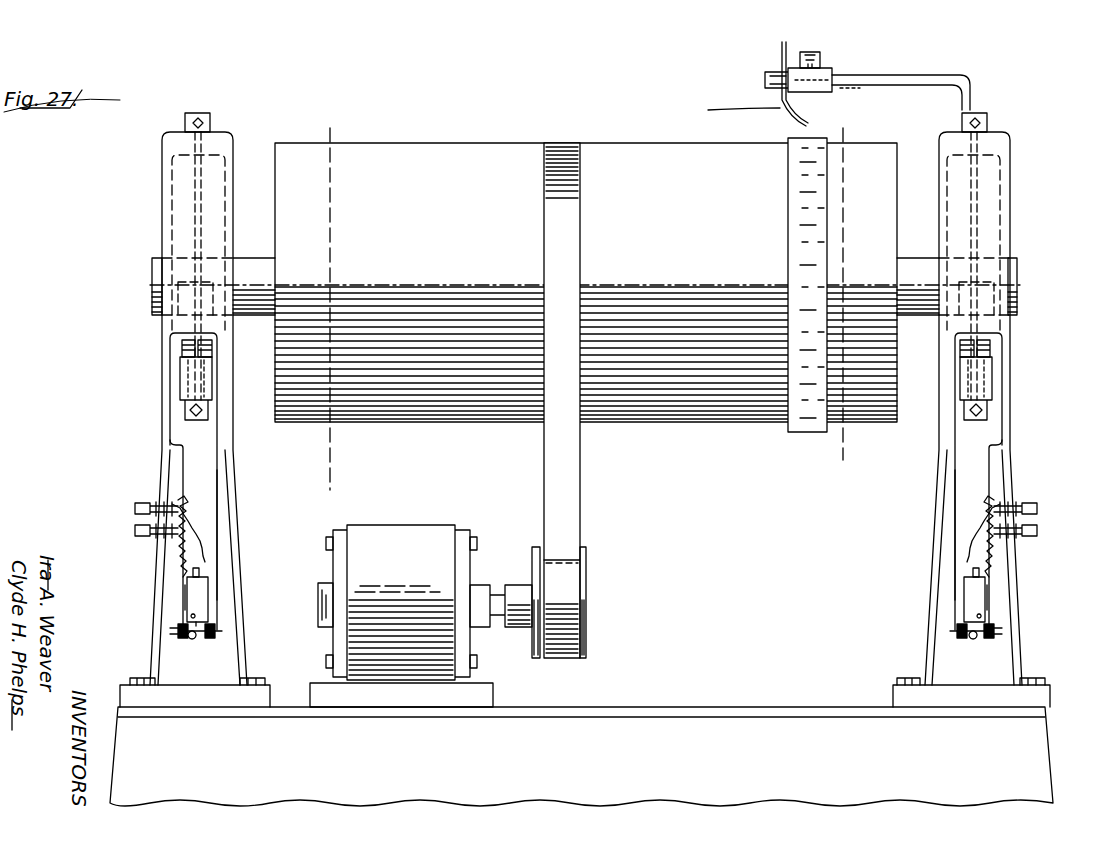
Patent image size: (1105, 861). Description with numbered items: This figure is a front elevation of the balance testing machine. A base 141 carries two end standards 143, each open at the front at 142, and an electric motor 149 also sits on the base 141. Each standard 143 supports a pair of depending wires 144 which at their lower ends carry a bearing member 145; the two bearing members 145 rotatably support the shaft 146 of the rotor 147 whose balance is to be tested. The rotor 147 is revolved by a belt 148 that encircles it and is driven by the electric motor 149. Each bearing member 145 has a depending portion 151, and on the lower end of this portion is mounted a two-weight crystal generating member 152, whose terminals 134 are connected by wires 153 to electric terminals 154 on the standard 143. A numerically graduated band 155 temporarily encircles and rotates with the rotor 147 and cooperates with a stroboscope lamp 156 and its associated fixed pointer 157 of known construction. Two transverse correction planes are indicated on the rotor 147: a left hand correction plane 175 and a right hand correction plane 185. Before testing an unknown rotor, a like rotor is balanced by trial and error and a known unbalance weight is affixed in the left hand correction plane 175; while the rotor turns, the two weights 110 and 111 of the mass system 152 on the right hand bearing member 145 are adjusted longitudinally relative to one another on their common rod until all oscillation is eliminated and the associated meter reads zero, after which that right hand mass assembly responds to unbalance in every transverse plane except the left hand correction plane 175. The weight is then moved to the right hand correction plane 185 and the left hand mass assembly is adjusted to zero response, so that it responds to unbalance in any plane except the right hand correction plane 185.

The weight 110 is at (214, 630).
The weight 111 is at (178, 632).
The terminals 134 is at (192, 576).
The base 141 is at (575, 762).
The open front 142 is at (168, 380).
The end standard 143 is at (1003, 420).
The depending wires 144 is at (196, 240).
The bearing member 145 is at (185, 437).
The shaft 146 is at (155, 276).
The rotor 147 is at (427, 160).
The belt 148 is at (565, 150).
The electric motor 149 is at (386, 565).
The depending portion 151 is at (958, 497).
The two-weight crystal generating member 152 is at (208, 598).
The wires 153 is at (188, 570).
The electric terminals 154 is at (147, 530).
The numerically graduated band 155 is at (797, 278).
The stroboscope lamp 156 is at (830, 92).
The fixed pointer 157 is at (714, 124).
The left hand correction plane 175 is at (305, 500).
The right hand correction plane 185 is at (830, 488).